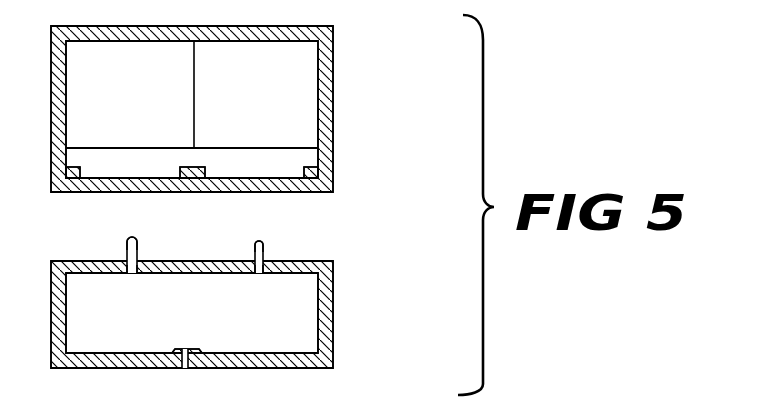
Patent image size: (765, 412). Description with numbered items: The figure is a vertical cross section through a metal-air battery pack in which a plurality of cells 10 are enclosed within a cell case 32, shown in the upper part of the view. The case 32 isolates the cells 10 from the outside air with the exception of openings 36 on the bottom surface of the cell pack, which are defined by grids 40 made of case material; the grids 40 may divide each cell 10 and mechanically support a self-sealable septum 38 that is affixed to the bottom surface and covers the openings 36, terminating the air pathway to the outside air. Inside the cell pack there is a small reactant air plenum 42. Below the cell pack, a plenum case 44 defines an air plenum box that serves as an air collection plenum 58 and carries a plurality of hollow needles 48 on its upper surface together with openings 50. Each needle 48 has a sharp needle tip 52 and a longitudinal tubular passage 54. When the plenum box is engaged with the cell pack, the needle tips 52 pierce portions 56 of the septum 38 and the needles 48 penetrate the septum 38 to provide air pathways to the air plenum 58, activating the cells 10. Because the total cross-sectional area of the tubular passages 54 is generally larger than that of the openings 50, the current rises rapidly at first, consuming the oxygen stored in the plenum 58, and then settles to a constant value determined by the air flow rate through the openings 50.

The cells 10 is at (122, 97).
The cell case 32 is at (333, 100).
The openings 36 is at (127, 166).
The self-sealable septum 38 is at (333, 191).
The grids 40 is at (187, 166).
The reactant air plenum 42 is at (242, 166).
The plenum case 44 is at (333, 295).
The hollow needles 48 is at (137, 257).
The openings 50 is at (185, 368).
The needle tips 52 is at (127, 244).
The tubular passages 54 is at (128, 273).
The portions of the septum 56 is at (130, 193).
The air plenum 58 is at (172, 326).